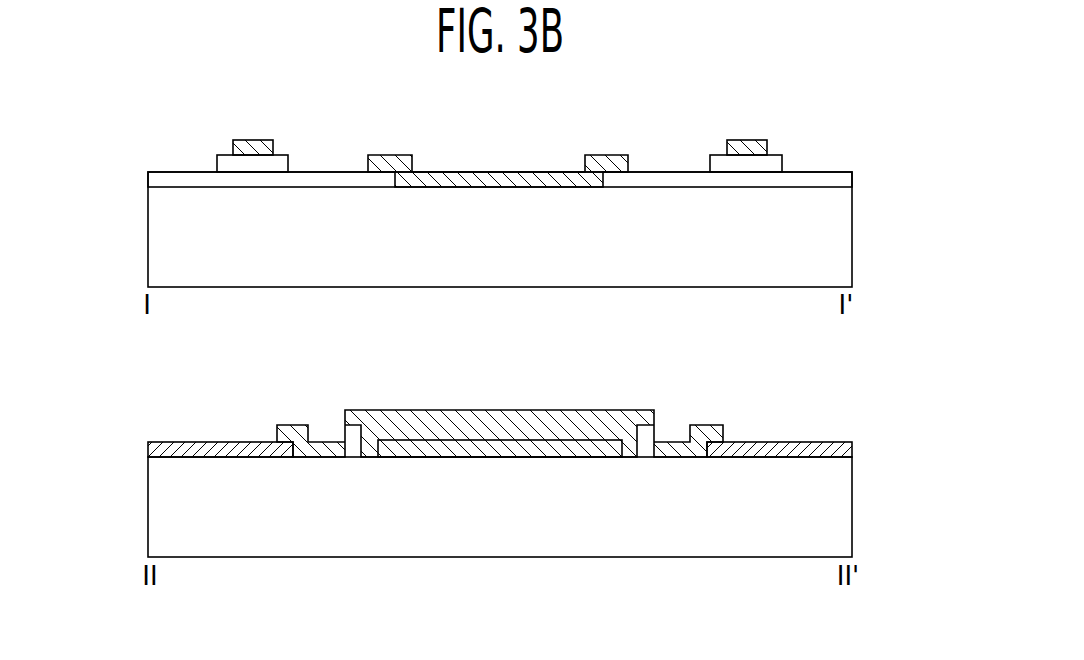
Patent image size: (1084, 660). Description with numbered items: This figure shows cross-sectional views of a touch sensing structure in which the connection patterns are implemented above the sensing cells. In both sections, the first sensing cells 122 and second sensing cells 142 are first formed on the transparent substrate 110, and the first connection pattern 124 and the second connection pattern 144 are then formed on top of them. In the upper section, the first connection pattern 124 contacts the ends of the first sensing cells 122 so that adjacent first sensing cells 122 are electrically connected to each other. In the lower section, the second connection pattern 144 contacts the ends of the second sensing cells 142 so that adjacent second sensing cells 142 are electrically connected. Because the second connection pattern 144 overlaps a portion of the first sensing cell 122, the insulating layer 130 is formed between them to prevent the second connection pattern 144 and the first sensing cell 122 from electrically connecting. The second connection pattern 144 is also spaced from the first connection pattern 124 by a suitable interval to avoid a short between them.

The transparent substrate 110 is at (838, 228).
The first sensing cell 122 is at (163, 182).
The first connection pattern 124 is at (502, 178).
The insulating layer 130 is at (255, 165).
The second sensing cell 142 is at (155, 450).
The second connection pattern 144 is at (249, 150).